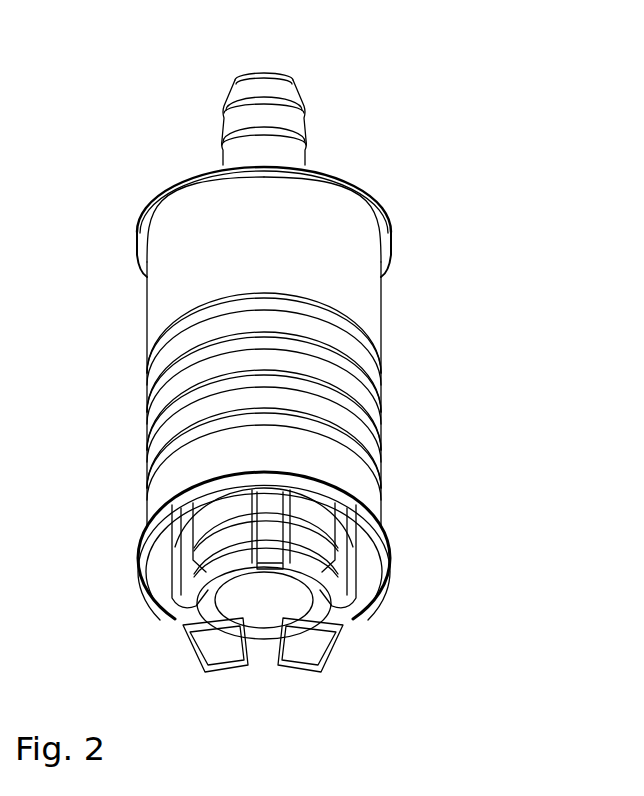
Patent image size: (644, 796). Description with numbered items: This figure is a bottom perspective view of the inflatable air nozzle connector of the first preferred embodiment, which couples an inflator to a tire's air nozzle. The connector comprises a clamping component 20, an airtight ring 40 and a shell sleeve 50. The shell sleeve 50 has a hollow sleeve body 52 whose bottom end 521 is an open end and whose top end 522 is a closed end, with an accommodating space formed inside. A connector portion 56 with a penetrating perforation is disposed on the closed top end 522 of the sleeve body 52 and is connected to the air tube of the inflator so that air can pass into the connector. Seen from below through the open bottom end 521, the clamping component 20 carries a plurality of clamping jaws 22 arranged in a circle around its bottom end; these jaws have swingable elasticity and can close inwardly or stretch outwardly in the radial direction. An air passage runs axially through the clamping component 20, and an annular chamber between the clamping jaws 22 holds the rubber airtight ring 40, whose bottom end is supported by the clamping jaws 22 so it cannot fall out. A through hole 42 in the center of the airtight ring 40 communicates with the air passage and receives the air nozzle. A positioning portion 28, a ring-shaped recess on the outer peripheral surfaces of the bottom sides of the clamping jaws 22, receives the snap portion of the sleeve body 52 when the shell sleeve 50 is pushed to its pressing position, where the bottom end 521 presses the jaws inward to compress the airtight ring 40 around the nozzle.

The clamping component 20 is at (368, 647).
The clamping jaws 22 is at (318, 653).
The positioning portion 28 is at (317, 535).
The airtight ring 40 is at (235, 602).
The through hole 42 is at (265, 578).
The shell sleeve 50 is at (410, 211).
The sleeve body 52 is at (160, 303).
The bottom end 521 is at (150, 562).
The top end 522 is at (140, 222).
The connector portion 56 is at (305, 110).